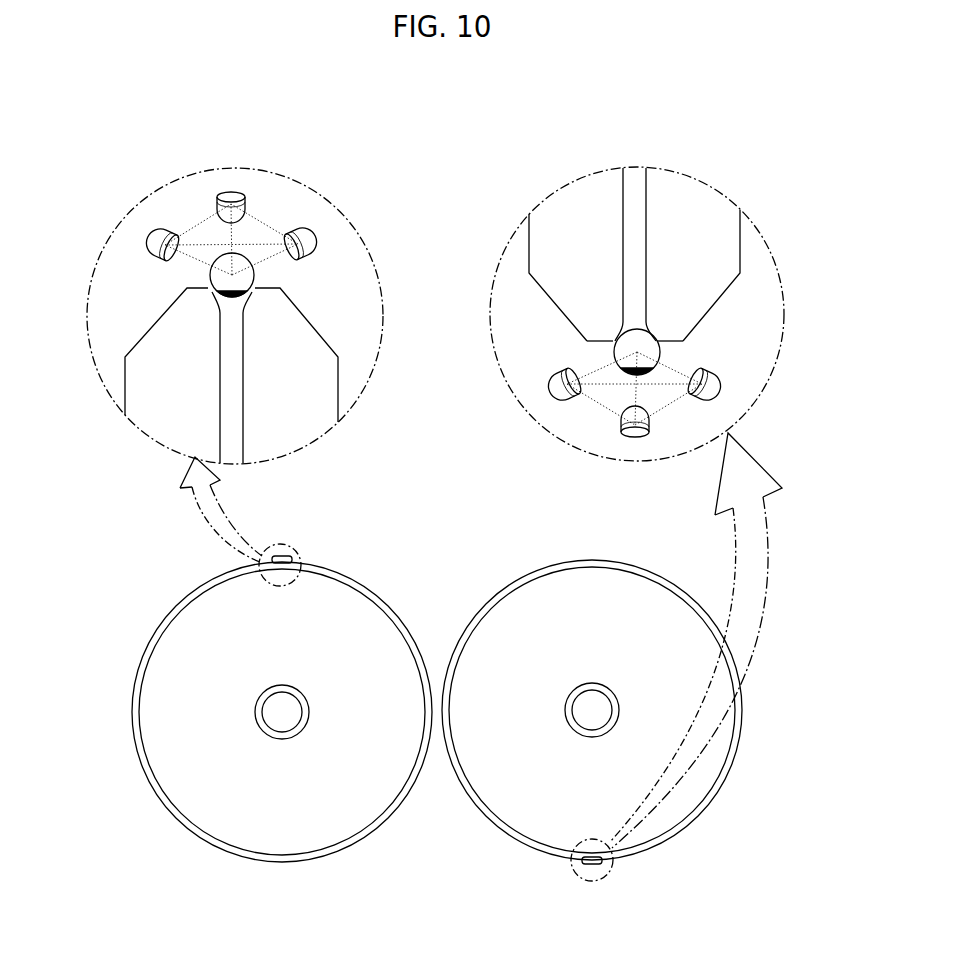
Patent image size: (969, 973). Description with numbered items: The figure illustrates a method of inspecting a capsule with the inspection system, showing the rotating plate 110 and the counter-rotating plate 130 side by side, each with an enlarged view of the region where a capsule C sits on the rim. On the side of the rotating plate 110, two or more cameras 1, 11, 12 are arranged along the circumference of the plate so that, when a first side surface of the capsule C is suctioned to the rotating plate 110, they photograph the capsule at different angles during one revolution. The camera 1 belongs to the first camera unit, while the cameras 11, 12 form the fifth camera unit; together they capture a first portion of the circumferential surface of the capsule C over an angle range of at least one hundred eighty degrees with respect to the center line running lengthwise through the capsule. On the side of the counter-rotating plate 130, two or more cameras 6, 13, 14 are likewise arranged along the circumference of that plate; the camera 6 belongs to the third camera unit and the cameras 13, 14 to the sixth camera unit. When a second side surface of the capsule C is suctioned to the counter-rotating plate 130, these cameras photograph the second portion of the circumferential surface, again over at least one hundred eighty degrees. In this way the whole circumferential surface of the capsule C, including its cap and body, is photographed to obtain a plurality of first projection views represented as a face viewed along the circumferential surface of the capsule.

The camera 1 is at (152, 241).
The camera 11 is at (231, 190).
The camera 12 is at (313, 240).
The rotating plate 110 is at (290, 338).
The counter-rotating plate 130 is at (707, 240).
The capsule C is at (640, 352).
The camera 13 is at (636, 441).
The camera 14 is at (573, 383).
The camera 6 is at (717, 388).